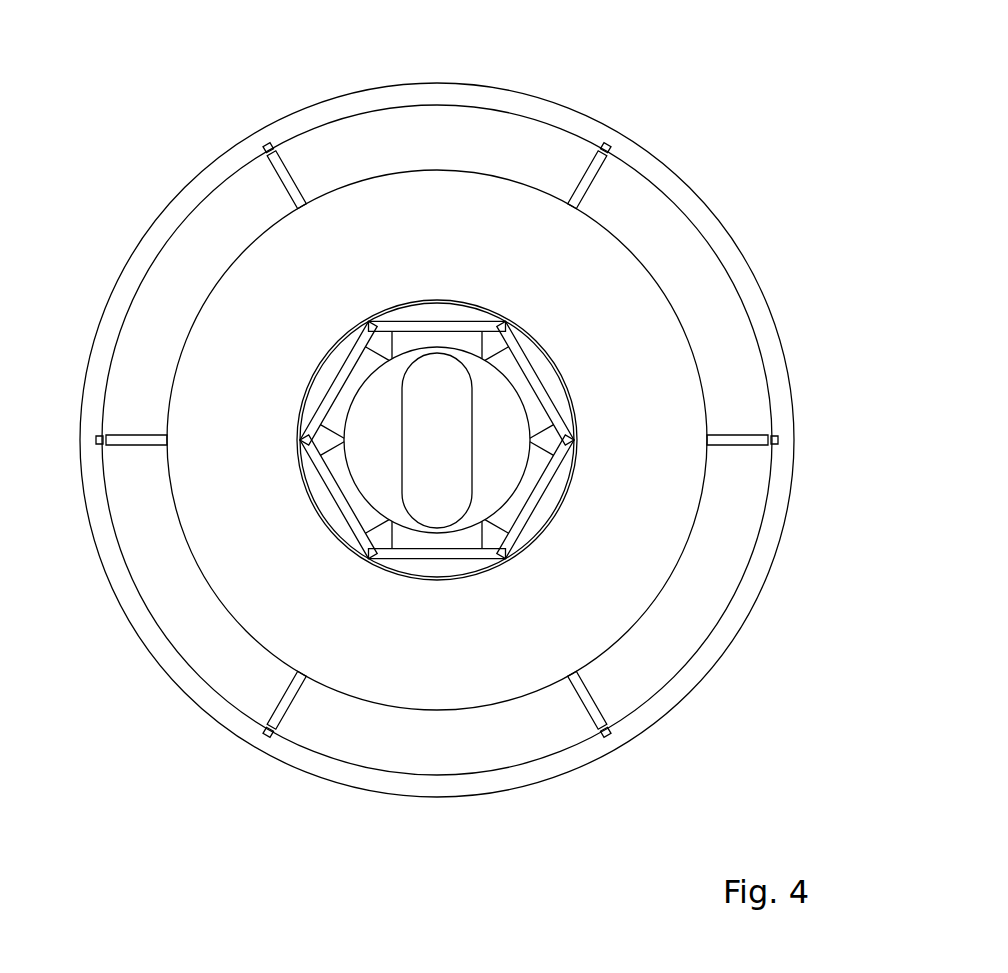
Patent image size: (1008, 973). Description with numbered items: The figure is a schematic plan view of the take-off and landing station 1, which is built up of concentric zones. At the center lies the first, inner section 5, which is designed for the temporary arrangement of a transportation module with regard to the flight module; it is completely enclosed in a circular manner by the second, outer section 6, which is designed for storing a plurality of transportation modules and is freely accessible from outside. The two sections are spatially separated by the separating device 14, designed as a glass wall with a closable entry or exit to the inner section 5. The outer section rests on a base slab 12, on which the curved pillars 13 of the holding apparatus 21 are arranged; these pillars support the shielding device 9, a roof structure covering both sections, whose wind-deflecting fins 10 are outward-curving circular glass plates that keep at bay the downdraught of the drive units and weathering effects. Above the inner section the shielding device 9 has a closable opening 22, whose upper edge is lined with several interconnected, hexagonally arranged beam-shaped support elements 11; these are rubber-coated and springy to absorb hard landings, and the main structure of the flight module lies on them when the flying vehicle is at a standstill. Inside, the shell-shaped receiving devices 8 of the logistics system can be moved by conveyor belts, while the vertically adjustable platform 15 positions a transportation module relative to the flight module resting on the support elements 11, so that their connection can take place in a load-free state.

The take-off and landing station 1 is at (677, 140).
The first, inner section 5 is at (437, 565).
The second, outer section 6 is at (717, 637).
The shell-shaped receiving device 8 is at (423, 460).
The shielding device 9 is at (710, 305).
The wind-deflecting fins 10 is at (437, 440).
The beam-shaped support element 11 is at (457, 325).
The base slab 12 is at (555, 780).
The pillar 13 is at (282, 705).
The separating device 14 is at (303, 475).
The vertically adjustable platform 15 is at (488, 470).
The holding apparatus 21 is at (434, 464).
The closable opening 22 is at (333, 537).